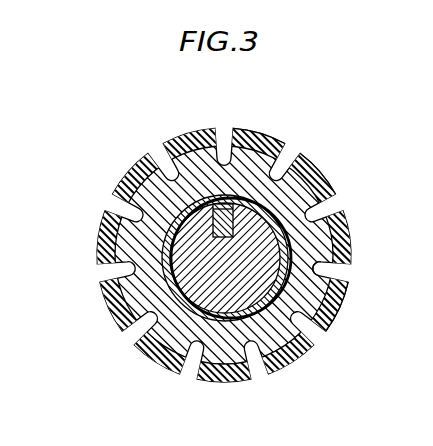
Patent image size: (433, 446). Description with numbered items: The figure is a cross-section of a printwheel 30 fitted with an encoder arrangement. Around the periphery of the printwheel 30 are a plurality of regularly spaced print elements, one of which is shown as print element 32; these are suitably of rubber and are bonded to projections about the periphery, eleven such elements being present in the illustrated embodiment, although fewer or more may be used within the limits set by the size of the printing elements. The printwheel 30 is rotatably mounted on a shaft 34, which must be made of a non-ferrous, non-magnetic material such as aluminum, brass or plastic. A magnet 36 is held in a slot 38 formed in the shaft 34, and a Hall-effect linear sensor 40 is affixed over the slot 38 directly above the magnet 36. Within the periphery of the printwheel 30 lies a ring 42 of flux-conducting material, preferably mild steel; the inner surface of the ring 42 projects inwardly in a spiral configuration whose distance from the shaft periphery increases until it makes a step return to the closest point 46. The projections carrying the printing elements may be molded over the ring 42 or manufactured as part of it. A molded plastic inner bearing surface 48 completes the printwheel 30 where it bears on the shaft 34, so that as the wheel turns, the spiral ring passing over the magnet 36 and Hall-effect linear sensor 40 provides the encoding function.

The printwheel 30 is at (80, 199).
The print element 32 is at (324, 162).
The shaft 34 is at (193, 252).
The magnet 36 is at (212, 215).
The slot 38 is at (312, 300).
The Hall-effect linear sensor 40 is at (252, 121).
The ring 42 is at (310, 239).
The closest point 46 is at (206, 373).
The molded plastic inner bearing surface 48 is at (289, 353).